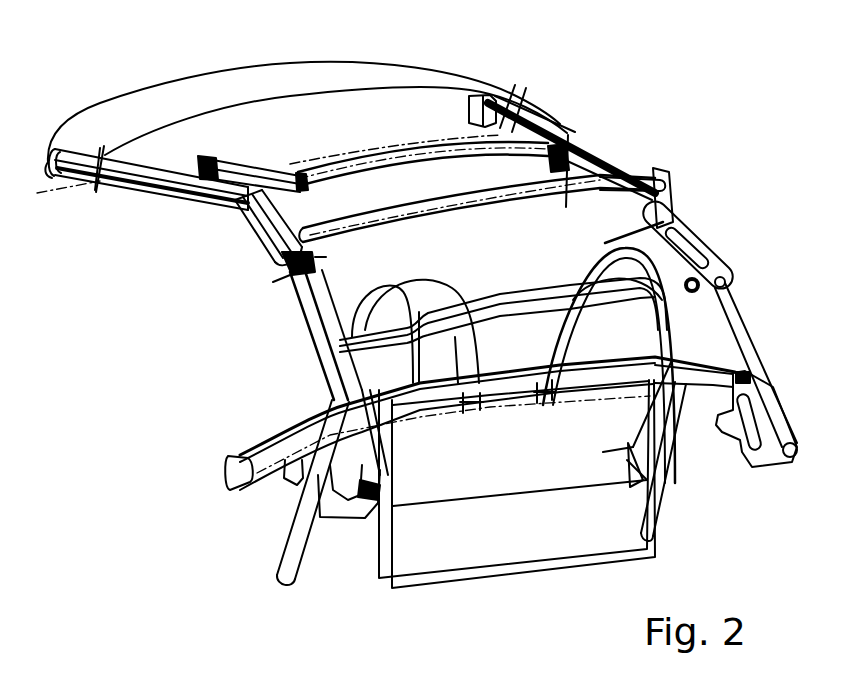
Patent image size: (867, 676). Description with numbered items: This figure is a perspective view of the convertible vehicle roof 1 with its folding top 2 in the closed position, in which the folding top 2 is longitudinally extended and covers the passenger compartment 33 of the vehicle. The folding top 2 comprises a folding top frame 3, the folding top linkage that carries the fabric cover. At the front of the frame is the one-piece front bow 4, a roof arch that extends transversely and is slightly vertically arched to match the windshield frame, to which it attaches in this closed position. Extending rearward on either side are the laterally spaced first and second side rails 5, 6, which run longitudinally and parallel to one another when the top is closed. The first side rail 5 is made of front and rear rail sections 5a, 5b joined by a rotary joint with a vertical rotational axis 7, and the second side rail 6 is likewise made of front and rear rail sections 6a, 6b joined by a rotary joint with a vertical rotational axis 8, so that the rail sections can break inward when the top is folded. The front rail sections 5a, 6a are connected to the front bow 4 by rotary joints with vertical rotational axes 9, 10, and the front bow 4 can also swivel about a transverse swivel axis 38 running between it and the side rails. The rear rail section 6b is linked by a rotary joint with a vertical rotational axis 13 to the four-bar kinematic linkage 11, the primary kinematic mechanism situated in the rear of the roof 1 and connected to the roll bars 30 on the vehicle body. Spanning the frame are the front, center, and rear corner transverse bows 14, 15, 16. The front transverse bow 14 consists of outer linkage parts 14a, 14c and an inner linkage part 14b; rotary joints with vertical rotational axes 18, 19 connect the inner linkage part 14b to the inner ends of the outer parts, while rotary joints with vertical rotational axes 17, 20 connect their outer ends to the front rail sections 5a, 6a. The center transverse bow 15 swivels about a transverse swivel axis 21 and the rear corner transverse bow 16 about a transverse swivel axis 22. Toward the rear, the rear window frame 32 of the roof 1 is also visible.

The convertible vehicle roof 1 is at (744, 214).
The folding top 2 is at (634, 172).
The folding top frame 3 is at (180, 165).
The front bow 4 is at (325, 72).
The first side rail 5 is at (236, 208).
The front rail section 5a is at (134, 190).
The rear rail section 5b is at (247, 240).
The second side rail 6 is at (566, 165).
The front rail section 6a is at (560, 138).
The rear rail section 6b is at (603, 172).
The z-parallel rotational axis 7 is at (240, 232).
The z-parallel rotational axis 8 is at (590, 148).
The z-parallel rotational axis 9 is at (100, 148).
The z-parallel rotational axis 10 is at (512, 91).
The four-bar kinematic linkage 11 is at (770, 348).
The z-parallel rotational axis 13 is at (668, 195).
The front transverse bow 14 is at (422, 150).
The outer linkage part 14a is at (234, 160).
The inner linkage part 14b is at (362, 165).
The outer linkage part 14c is at (552, 146).
The center transverse bow 15 is at (475, 207).
The rear corner transverse bow 16 is at (680, 300).
The z-parallel rotational axis 17 is at (203, 150).
The z-parallel rotational axis 18 is at (307, 166).
The z-parallel rotational axis 19 is at (540, 162).
The z-parallel rotational axis 20 is at (531, 110).
The swivel axis 21 is at (682, 205).
The swivel axis 22 is at (288, 282).
The roll bars 30 is at (320, 333).
The rear window frame 32 is at (470, 297).
The passenger compartment 33 is at (424, 404).
The y-parallel swivel axis 38 is at (44, 200).